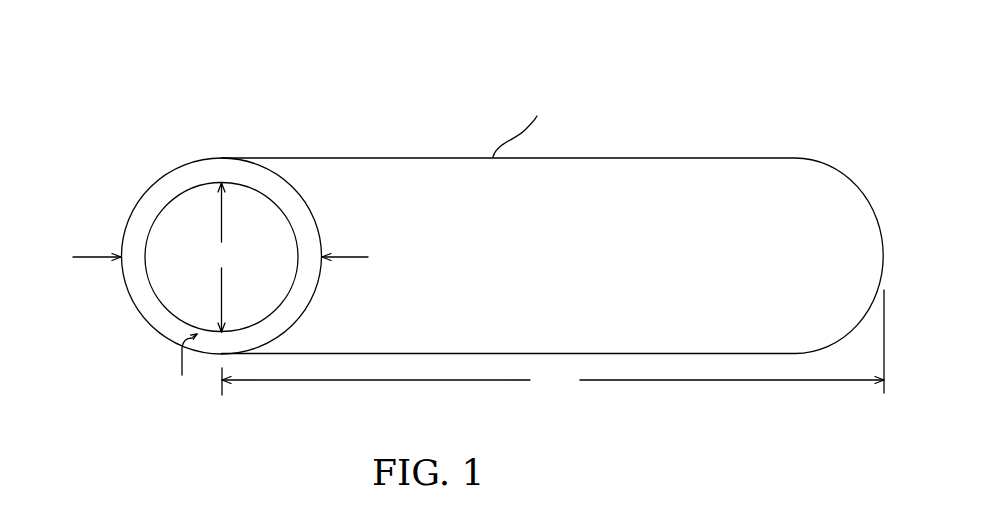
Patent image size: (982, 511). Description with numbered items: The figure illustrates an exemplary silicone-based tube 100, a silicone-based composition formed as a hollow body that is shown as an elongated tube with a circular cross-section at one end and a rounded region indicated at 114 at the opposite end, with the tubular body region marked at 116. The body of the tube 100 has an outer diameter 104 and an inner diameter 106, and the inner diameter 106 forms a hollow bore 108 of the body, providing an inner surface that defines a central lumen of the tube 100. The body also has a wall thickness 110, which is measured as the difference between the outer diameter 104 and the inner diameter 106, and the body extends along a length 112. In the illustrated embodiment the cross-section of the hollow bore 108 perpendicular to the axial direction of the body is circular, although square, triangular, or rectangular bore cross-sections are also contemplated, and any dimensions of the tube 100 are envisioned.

The silicone-based tube 100 is at (580, 38).
The outer diameter 104 is at (93, 254).
The inner diameter 106 is at (225, 257).
The hollow bore 108 is at (177, 277).
The wall thickness 110 is at (176, 364).
The length 112 is at (553, 342).
The rounded distal end 114 is at (785, 152).
The outer surface / tubular body 116 is at (220, 153).